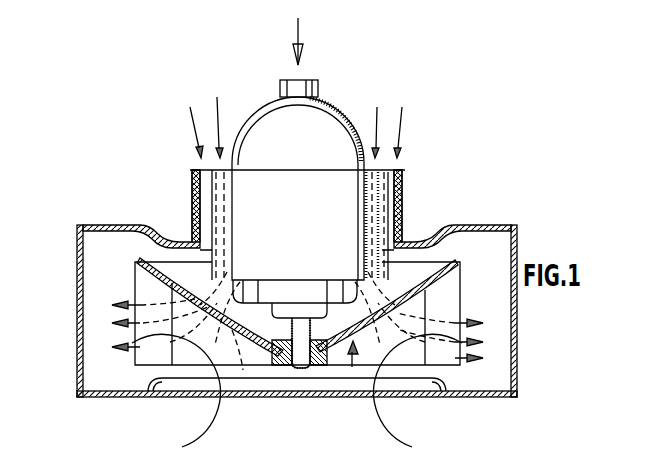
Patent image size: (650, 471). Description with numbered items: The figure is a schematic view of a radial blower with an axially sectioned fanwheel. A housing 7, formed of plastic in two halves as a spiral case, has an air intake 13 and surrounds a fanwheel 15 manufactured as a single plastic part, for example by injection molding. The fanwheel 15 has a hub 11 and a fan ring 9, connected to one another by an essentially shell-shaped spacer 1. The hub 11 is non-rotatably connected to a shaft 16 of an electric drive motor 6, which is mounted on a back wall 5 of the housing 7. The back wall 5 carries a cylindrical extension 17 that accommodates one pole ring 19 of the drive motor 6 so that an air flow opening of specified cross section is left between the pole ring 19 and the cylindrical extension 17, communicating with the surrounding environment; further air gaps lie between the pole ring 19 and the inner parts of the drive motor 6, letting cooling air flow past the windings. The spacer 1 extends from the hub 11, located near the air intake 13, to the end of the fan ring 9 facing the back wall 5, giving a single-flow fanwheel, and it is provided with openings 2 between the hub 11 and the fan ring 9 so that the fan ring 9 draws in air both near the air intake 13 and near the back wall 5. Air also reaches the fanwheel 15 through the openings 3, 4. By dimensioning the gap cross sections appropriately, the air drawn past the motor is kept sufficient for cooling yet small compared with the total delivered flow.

The spacer 1 is at (238, 337).
The openings 2 is at (208, 320).
The opening 3 is at (404, 160).
The opening 4 is at (379, 158).
The back wall 5 is at (455, 228).
The electric drive motor 6 is at (343, 112).
The housing 7 is at (66, 321).
The fan ring 9 is at (145, 350).
The hub 11 is at (267, 410).
The air intake 13 is at (322, 388).
The fanwheel 15 is at (353, 368).
The shaft 16 is at (291, 370).
The cylindrical extension 17 is at (406, 192).
The pole ring 19 is at (193, 197).